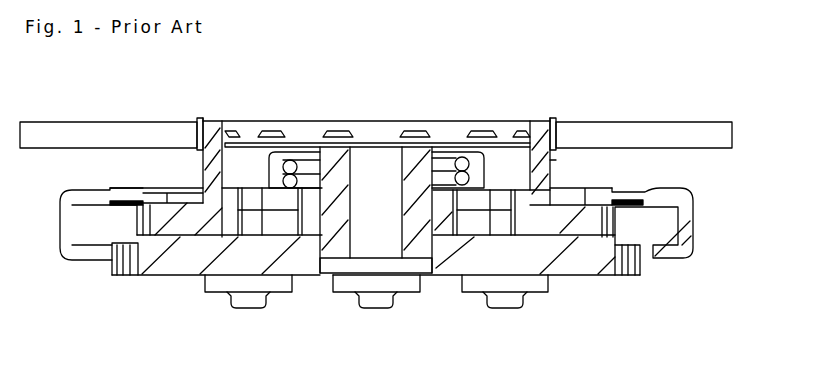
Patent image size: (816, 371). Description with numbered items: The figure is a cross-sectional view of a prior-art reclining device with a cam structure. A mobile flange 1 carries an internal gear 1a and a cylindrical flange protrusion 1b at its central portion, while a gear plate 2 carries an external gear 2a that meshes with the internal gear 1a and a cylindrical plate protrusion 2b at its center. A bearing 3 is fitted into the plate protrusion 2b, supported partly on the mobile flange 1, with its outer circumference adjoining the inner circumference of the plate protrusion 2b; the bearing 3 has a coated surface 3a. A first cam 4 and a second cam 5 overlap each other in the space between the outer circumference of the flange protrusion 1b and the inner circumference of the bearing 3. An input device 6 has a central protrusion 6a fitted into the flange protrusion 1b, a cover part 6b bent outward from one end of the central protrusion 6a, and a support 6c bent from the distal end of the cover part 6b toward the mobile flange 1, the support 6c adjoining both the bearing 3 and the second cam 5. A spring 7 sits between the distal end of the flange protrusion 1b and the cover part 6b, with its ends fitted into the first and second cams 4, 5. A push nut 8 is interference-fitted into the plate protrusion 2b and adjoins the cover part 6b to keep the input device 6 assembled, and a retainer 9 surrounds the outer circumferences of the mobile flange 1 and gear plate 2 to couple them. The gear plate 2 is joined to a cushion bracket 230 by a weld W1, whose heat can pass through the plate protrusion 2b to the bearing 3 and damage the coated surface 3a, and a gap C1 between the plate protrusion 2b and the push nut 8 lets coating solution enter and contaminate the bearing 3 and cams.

The mobile flange 1 is at (172, 266).
The internal gear 1a is at (136, 227).
The flange protrusion 1b is at (443, 226).
The gear plate 2 is at (577, 228).
The external gear 2a is at (130, 212).
The plate protrusion 2b is at (540, 125).
The bearing 3 is at (519, 225).
The coated surface 3a is at (243, 223).
The first cam 4 is at (284, 223).
The second cam 5 is at (279, 187).
The input device 6 is at (353, 170).
The central protrusion 6a is at (390, 214).
The cover part 6b is at (453, 146).
The support 6c is at (558, 160).
The spring 7 is at (305, 163).
The push nut 8 is at (392, 132).
The retainer 9 is at (688, 225).
The gap C1 is at (216, 163).
The weld W1 is at (200, 118).
The cushion bracket 230 is at (87, 125).